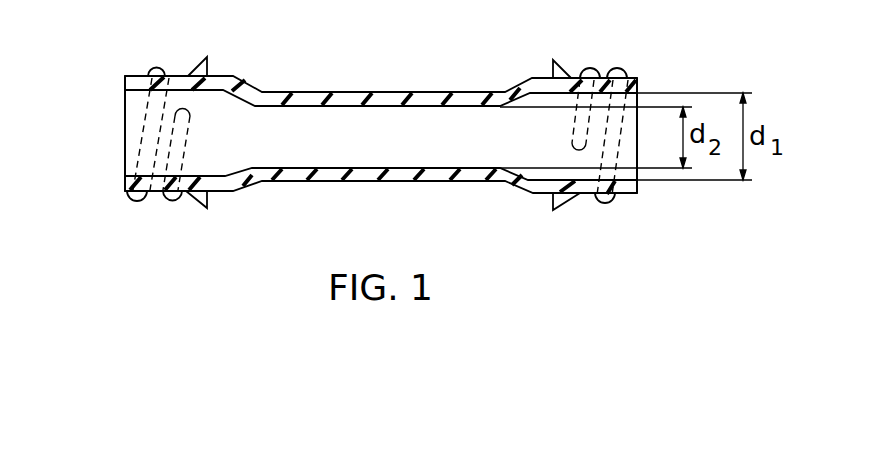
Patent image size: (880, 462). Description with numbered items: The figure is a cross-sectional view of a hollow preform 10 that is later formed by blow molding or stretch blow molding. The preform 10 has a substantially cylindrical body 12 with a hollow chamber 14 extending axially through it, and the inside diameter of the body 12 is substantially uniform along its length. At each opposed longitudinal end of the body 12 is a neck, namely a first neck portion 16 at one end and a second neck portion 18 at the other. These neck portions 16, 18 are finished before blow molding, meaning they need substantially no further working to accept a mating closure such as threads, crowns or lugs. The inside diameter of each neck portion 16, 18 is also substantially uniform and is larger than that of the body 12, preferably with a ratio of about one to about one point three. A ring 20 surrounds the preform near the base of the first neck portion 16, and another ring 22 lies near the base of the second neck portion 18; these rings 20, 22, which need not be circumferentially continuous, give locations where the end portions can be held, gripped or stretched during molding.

The preform 10 is at (370, 120).
The cylindrical body 12 is at (447, 182).
The hollow chamber 14 is at (412, 163).
The first neck portion 16 is at (125, 192).
The second neck portion 18 is at (622, 198).
The ring 20 is at (185, 82).
The ring 22 is at (562, 63).